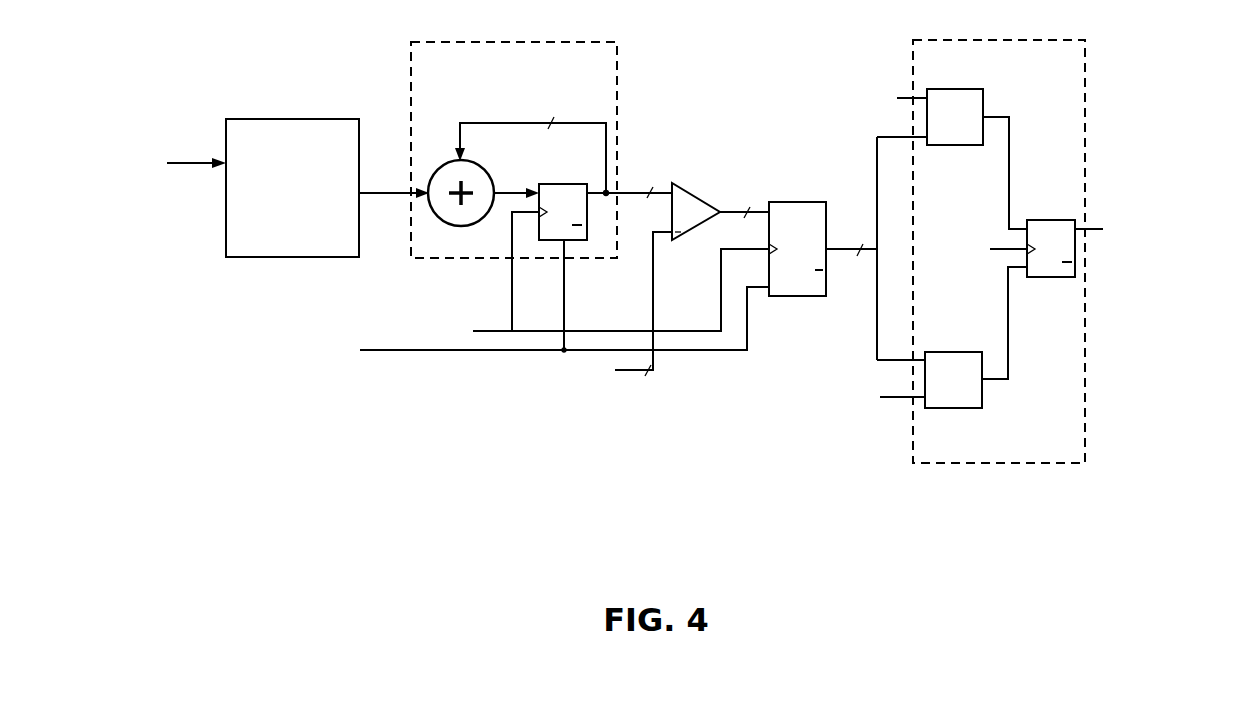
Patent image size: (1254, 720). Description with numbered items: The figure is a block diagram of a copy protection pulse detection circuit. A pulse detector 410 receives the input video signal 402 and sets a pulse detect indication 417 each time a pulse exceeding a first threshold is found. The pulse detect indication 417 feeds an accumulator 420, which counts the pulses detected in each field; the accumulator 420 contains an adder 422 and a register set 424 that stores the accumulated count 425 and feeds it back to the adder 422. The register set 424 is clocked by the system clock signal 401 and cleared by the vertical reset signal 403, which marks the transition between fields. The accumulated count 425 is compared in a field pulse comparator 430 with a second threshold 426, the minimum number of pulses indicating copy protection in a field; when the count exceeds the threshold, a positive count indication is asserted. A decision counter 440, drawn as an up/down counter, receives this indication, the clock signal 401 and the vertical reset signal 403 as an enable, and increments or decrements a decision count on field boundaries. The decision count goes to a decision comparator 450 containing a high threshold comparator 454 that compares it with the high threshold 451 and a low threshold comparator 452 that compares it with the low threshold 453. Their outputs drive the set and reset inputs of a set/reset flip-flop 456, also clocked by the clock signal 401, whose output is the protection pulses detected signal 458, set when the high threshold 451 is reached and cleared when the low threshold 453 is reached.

The input video signal 402 is at (159, 164).
The pulse detector 410 is at (292, 188).
The pulse detect indication 417 is at (385, 198).
The accumulator 420 is at (514, 150).
The adder 422 is at (448, 175).
The register set 424 is at (562, 200).
The accumulated count 425 is at (628, 187).
The field pulse comparator 430 is at (687, 203).
The second threshold 426 is at (587, 332).
The system clock signal 401 is at (716, 280).
The vertical reset signal 403 is at (520, 318).
The decision counter 440 is at (797, 289).
The decision comparator 450 is at (981, 251).
The high threshold 451 is at (856, 85).
The high threshold comparator 454 is at (928, 92).
The low threshold 453 is at (855, 415).
The low threshold comparator 452 is at (955, 397).
The set/reset flip-flop 456 is at (1053, 232).
The protection pulses detected signal 458 is at (1150, 233).